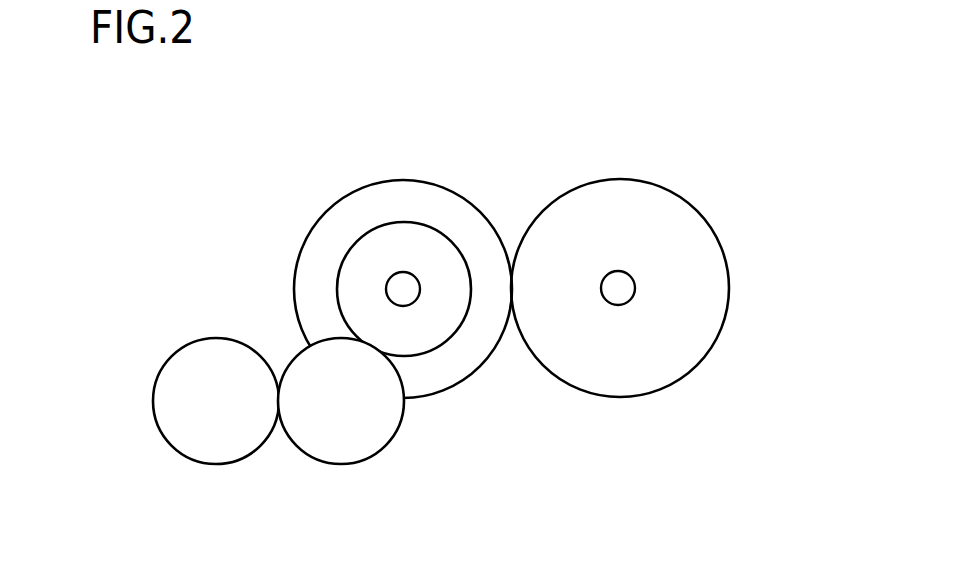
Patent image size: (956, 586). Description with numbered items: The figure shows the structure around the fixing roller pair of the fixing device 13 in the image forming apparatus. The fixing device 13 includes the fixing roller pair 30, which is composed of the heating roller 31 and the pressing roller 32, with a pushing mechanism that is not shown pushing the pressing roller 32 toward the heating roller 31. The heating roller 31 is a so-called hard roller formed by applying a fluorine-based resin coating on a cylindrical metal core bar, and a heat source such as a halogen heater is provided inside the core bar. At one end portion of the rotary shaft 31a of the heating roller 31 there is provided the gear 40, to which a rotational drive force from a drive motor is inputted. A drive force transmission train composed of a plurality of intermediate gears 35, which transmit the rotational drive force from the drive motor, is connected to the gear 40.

The fixing device 13 is at (707, 142).
The fixing roller pair 30 is at (550, 119).
The heating roller 31 is at (443, 213).
The rotary shaft 31a is at (403, 283).
The pressing roller 32 is at (577, 212).
The intermediate gears 35 is at (220, 443).
The gear 40 is at (428, 318).